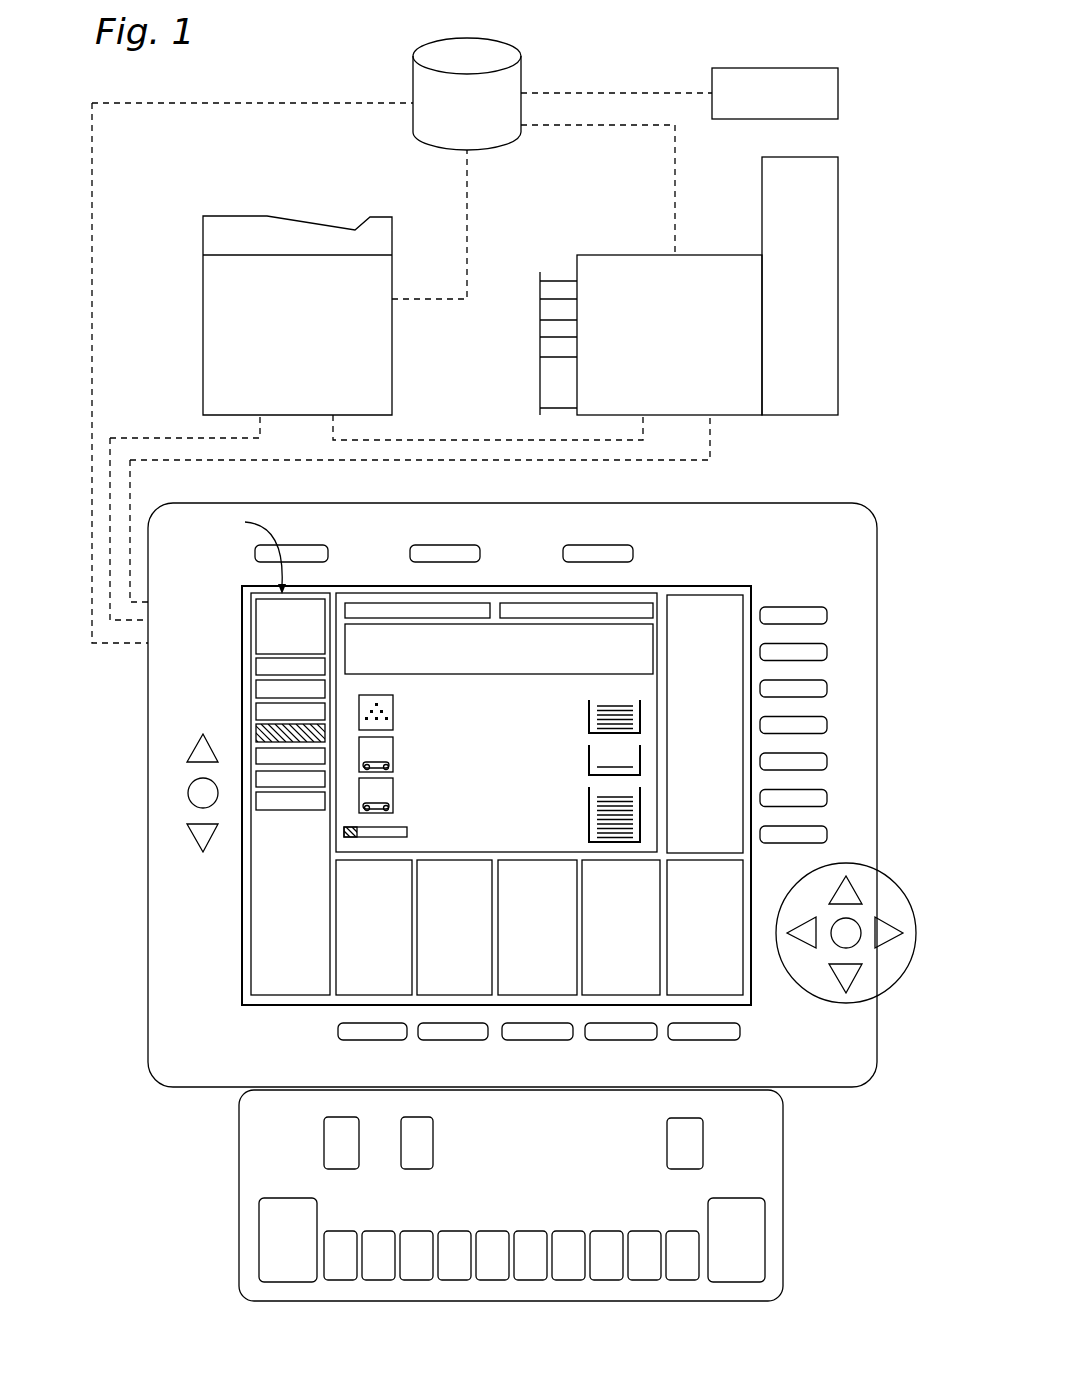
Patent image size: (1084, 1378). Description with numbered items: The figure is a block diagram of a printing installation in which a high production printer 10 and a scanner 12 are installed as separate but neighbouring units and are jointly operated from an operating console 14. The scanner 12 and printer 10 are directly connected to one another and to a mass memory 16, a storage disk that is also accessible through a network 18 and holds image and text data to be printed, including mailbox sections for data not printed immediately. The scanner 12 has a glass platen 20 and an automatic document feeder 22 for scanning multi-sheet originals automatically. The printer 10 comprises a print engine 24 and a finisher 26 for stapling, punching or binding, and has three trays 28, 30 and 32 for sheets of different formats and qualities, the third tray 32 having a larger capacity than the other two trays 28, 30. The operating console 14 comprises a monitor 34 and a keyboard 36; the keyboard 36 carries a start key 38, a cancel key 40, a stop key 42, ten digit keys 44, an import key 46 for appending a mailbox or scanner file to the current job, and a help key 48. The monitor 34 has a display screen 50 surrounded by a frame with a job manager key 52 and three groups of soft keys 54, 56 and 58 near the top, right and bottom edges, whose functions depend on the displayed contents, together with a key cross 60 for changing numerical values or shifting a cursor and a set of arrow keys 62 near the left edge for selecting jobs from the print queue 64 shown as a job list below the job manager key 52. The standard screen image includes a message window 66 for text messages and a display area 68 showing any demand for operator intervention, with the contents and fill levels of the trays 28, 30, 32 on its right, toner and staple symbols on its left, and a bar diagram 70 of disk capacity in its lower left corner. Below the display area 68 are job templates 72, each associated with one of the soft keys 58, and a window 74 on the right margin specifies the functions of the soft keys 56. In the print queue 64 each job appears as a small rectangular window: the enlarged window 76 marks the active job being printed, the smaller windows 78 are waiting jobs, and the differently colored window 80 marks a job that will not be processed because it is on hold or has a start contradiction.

The high production printer 10 is at (840, 262).
The scanner 12 is at (240, 193).
The operating console 14 is at (157, 1116).
The mass memory 16 is at (498, 138).
The network 18 is at (816, 104).
The glass platen 20 is at (293, 258).
The automatic document feeder 22 is at (220, 233).
The print engine 24 is at (688, 346).
The finisher 26 is at (815, 327).
The first tray 28 is at (539, 297).
The second tray 30 is at (539, 332).
The third tray 32 is at (546, 381).
The monitor 34 is at (840, 528).
The keyboard 36 is at (768, 1157).
The start key 38 is at (267, 1253).
The cancel key 40 is at (752, 1253).
The stop key 42 is at (680, 1138).
The digit keys 44 is at (490, 1247).
The import key 46 is at (340, 1132).
The help key 48 is at (423, 1137).
The display screen 50 is at (722, 585).
The job manager key 52 is at (290, 543).
The soft keys 54 is at (450, 543).
The soft keys 56 is at (796, 615).
The soft keys 58 is at (347, 1030).
The key cross 60 is at (882, 892).
The arrow keys 62 is at (190, 752).
The print queue 64 is at (244, 552).
The message window 66 is at (517, 657).
The display area 68 is at (413, 715).
The bar diagram 70 is at (383, 836).
The job templates 72 is at (468, 955).
The window 74 is at (720, 743).
The window 76 is at (270, 632).
The windows 78 is at (270, 667).
The window 80 is at (260, 730).